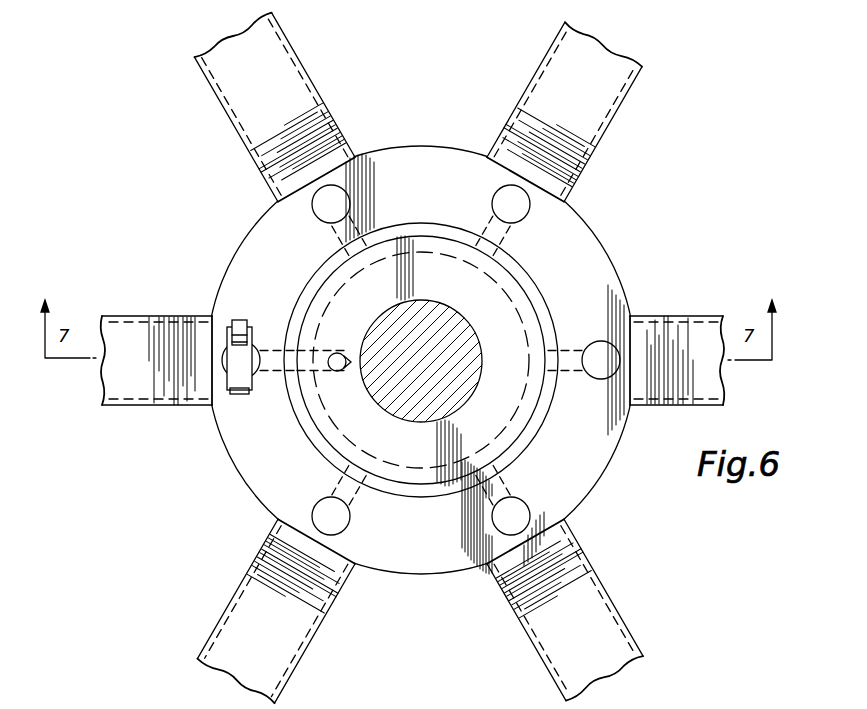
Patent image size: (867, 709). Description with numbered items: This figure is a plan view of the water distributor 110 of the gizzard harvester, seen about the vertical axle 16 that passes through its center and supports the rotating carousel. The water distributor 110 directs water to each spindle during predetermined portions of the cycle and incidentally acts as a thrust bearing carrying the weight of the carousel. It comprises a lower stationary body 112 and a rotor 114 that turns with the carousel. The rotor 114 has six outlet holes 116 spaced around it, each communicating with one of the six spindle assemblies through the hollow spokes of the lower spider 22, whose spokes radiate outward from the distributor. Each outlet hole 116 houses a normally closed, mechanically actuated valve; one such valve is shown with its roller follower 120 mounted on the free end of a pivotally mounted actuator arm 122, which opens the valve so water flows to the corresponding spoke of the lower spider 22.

The axle 16 is at (421, 349).
The lower spider 22 is at (677, 317).
The water distributor 110 is at (593, 498).
The lower stationary body 112 is at (493, 420).
The rotor 114 is at (567, 464).
The outlet holes 116 is at (512, 220).
The roller follower 120 is at (242, 320).
The actuator arm 122 is at (237, 392).